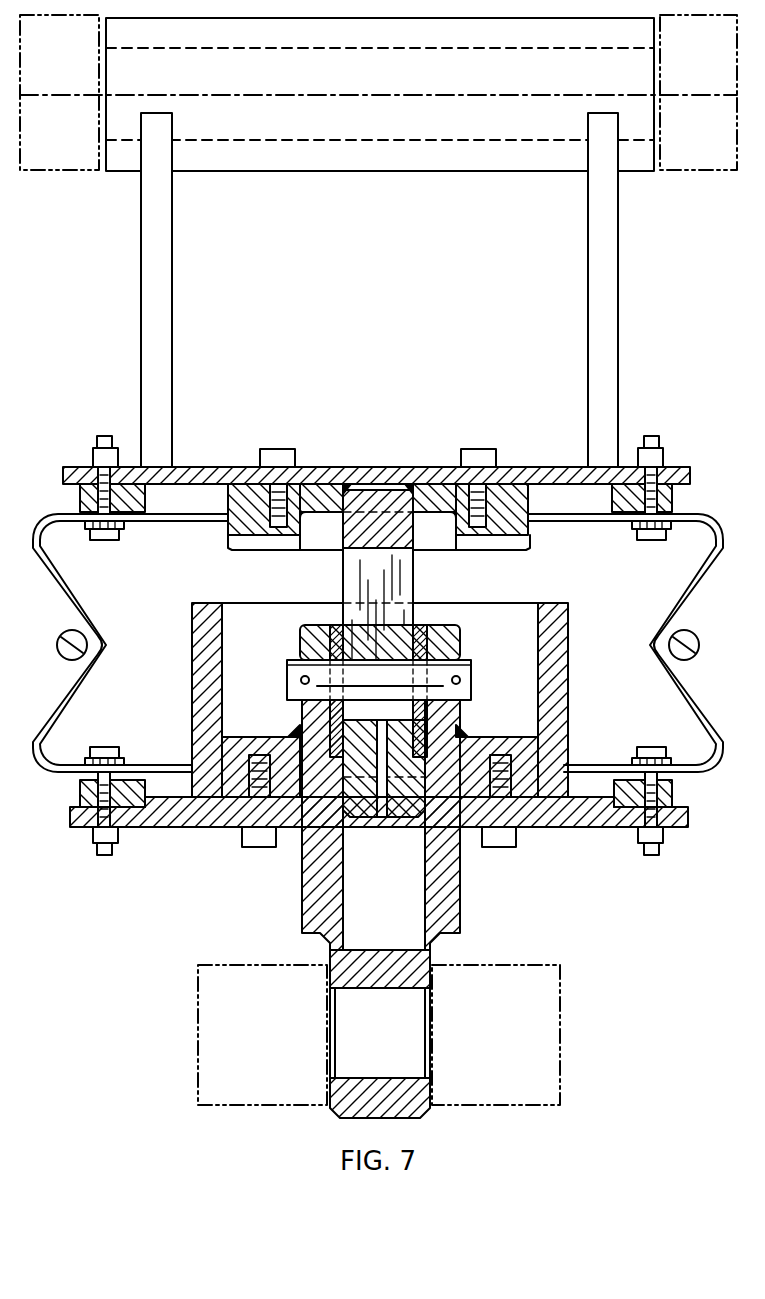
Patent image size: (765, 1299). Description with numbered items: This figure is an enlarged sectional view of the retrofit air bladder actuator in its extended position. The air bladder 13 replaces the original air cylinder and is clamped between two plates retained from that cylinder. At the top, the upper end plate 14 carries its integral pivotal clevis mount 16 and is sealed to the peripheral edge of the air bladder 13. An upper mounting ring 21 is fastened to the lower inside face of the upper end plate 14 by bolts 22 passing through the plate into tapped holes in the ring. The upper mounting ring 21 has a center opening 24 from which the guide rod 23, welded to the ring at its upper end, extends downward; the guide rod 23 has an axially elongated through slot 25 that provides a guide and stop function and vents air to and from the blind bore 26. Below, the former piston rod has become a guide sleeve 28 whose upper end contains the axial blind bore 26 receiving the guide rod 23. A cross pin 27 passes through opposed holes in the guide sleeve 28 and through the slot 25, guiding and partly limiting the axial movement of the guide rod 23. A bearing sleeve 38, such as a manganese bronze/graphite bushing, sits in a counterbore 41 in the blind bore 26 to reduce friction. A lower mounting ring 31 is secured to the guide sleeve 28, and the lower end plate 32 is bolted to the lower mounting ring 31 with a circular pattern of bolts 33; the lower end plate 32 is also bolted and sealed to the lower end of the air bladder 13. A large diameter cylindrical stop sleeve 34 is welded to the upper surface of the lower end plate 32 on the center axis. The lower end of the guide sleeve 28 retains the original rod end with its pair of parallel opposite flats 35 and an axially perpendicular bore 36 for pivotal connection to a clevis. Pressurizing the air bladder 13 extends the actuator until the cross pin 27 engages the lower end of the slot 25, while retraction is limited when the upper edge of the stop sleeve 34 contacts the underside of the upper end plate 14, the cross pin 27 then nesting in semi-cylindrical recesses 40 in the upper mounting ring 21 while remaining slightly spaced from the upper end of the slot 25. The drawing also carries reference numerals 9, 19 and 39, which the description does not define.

The air spring assembly 9 is at (648, 424).
The air bladder 13 is at (718, 532).
The upper end plate 14 is at (218, 470).
The pivotal clevis mount 16 is at (160, 322).
The clamp ring fastener 19 is at (80, 505).
The upper mounting ring 21 is at (248, 492).
The bolts 22 is at (278, 458).
The guide rod 23 is at (405, 598).
The center opening 24 is at (430, 492).
The through slot 25 is at (355, 568).
The blind bore 26 is at (432, 722).
The cross pin 27 is at (292, 675).
The guide sleeve 28 is at (452, 645).
The lower mounting ring 31 is at (214, 828).
The lower end plate 32 is at (158, 828).
The bolts 33 is at (505, 838).
The stop sleeve 34 is at (553, 678).
The flats 35 is at (432, 1033).
The bore 36 is at (360, 1078).
The bearing sleeve 38 is at (330, 703).
The spacer 39 is at (556, 481).
The semi-cylindrical recesses 40 is at (505, 548).
The counterbore 41 is at (382, 800).